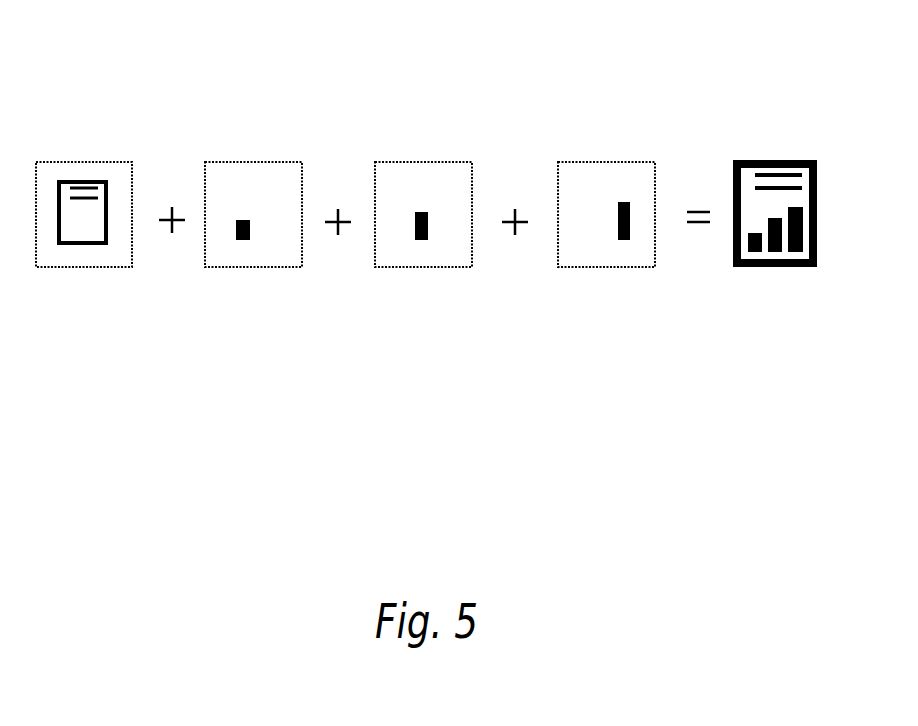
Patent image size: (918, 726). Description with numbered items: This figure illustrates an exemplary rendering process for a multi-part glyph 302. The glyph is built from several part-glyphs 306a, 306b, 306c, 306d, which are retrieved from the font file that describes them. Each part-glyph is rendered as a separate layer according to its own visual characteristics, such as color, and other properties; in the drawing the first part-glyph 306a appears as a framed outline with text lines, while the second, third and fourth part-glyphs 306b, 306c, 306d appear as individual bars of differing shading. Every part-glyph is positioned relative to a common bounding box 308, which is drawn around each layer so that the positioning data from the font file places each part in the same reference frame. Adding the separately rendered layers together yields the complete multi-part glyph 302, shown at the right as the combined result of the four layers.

The multi-part glyph 302 is at (773, 218).
The part-glyph 306a is at (92, 180).
The part-glyph 306b is at (250, 220).
The part-glyph 306c is at (420, 212).
The part-glyph 306d is at (628, 203).
The common bounding box 308 is at (130, 260).